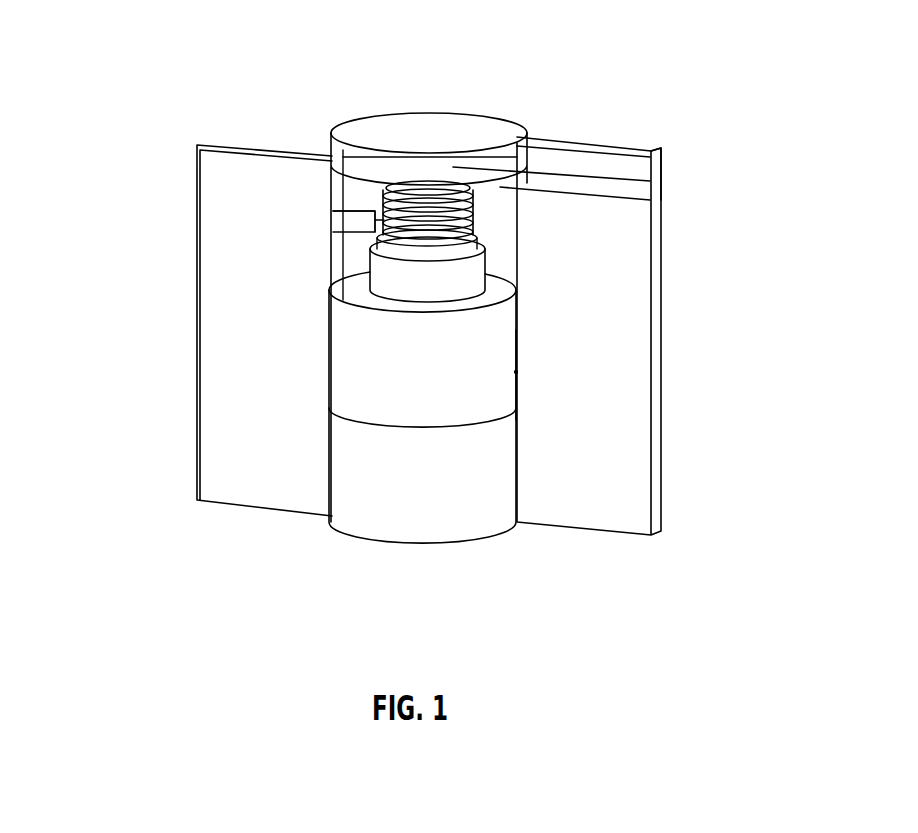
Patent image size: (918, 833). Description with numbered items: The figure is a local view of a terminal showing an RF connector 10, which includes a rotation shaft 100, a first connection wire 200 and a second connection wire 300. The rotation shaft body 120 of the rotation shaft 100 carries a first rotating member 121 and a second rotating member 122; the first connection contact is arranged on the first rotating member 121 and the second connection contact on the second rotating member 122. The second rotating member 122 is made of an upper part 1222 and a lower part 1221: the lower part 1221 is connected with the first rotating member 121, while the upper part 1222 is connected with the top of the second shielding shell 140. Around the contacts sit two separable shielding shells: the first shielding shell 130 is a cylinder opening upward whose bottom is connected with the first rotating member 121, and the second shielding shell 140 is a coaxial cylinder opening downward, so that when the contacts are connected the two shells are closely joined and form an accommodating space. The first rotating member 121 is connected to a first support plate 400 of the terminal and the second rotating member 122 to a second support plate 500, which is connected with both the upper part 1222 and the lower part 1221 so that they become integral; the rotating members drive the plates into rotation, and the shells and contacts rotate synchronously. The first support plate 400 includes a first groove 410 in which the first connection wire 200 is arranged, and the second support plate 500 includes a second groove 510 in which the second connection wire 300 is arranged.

The RF connector 10 is at (83, 48).
The rotation shaft 100 is at (487, 562).
The rotation shaft body 120 is at (142, 468).
The first rotating member 121 is at (370, 278).
The second rotating member 122 is at (440, 382).
The lower part 1221 is at (480, 385).
The upper part 1222 is at (497, 137).
The first shielding shell 130 is at (404, 240).
The second shielding shell 140 is at (430, 190).
The first connection wire 200 is at (353, 212).
The second connection wire 300 is at (570, 187).
The first support plate 400 is at (208, 260).
The first groove 410 is at (345, 231).
The second support plate 500 is at (607, 318).
The second groove 510 is at (662, 184).